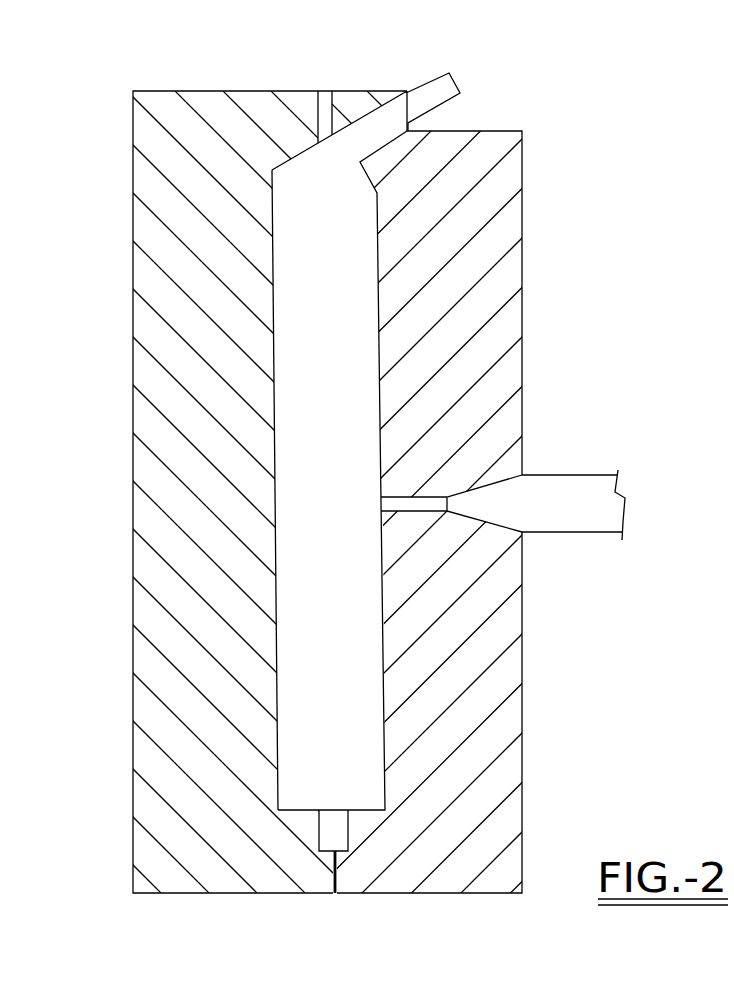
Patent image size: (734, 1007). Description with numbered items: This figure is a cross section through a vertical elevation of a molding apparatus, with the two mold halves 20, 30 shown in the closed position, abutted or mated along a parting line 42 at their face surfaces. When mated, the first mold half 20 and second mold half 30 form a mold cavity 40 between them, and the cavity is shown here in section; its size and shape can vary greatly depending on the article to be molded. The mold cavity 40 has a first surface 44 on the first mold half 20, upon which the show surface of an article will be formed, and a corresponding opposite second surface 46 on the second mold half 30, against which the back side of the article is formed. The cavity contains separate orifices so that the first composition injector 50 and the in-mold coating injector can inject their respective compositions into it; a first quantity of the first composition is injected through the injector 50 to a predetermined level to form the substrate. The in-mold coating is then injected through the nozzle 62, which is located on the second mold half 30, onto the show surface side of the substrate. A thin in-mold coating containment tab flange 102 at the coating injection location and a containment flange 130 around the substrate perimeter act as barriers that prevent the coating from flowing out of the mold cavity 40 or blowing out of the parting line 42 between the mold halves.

The first mold half 20 is at (522, 358).
The second mold half 30 is at (134, 343).
The mold cavity 40 is at (298, 601).
The parting line 42 is at (330, 877).
The first surface 44 is at (275, 408).
The second surface 46 is at (381, 445).
The first composition injector 50 is at (576, 477).
The nozzle 62 is at (322, 97).
The in-mold coating containment tab flange 102 is at (424, 87).
The in-mold coating containment flange 130 is at (343, 835).